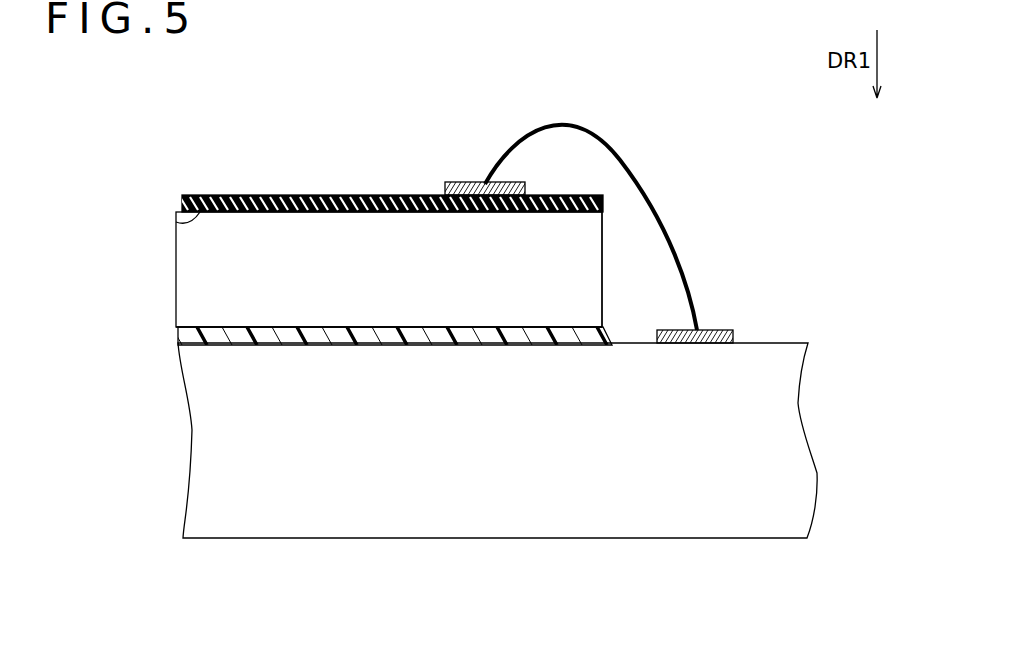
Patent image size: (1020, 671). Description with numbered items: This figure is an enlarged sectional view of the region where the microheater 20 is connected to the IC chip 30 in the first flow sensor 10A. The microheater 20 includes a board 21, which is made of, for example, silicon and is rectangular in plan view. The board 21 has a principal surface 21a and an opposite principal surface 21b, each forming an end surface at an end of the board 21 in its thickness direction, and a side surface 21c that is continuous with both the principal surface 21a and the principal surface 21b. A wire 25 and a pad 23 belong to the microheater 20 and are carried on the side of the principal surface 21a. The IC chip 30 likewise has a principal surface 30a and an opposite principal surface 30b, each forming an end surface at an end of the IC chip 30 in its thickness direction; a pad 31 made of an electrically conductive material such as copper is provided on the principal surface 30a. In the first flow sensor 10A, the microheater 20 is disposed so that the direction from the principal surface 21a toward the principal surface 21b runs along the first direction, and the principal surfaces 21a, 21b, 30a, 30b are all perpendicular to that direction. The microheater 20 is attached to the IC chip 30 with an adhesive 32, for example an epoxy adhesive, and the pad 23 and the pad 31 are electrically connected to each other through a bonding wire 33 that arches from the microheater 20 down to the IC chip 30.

The first flow sensor 10A is at (767, 173).
The microheater 20 is at (395, 186).
The board 21 is at (247, 225).
The principal surface 21a is at (177, 220).
The principal surface 21b is at (243, 328).
The side surface 21c is at (603, 263).
The pad 23 is at (440, 183).
The wire 25 is at (390, 195).
The IC chip 30 is at (550, 520).
The principal surface 30a is at (212, 347).
The principal surface 30b is at (287, 538).
The pad 31 is at (738, 330).
The adhesive 32 is at (382, 345).
The bonding wire 33 is at (628, 163).